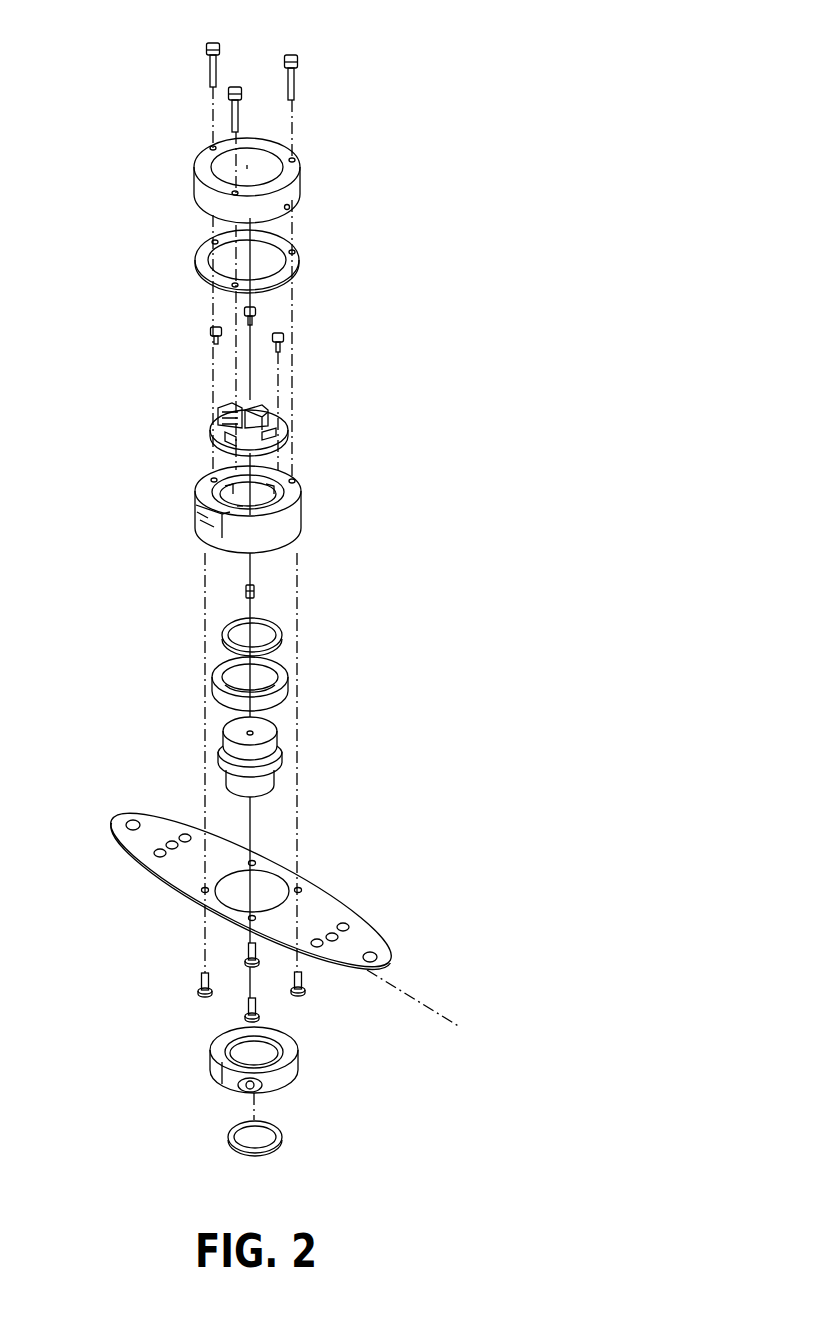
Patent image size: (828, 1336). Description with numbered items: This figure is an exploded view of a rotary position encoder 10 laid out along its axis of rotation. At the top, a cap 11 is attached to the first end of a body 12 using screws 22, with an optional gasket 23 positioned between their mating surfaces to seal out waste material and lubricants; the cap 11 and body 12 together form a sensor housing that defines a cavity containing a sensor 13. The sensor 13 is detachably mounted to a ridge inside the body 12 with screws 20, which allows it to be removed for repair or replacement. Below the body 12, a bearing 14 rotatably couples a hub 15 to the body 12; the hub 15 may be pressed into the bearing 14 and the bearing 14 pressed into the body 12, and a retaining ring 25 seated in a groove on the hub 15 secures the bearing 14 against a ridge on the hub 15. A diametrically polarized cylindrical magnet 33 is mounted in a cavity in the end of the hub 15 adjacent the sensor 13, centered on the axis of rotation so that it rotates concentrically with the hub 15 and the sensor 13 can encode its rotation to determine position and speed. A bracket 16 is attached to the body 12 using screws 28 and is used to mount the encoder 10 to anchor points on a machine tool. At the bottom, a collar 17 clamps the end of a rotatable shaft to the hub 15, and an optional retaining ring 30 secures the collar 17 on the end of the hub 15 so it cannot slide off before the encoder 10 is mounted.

The rotary position encoder 10 is at (367, 88).
The cap 11 is at (297, 185).
The body 12 is at (297, 510).
The sensor 13 is at (280, 427).
The bearing 14 is at (285, 685).
The hub 15 is at (280, 753).
The bracket 16 is at (333, 903).
The collar 17 is at (293, 1057).
The screws 20 is at (272, 338).
The screws 22 is at (285, 58).
The gasket 23 is at (197, 260).
The retaining ring 25 is at (218, 630).
The screws 28 is at (290, 983).
The retaining ring 30 is at (223, 1133).
The magnet 33 is at (238, 592).